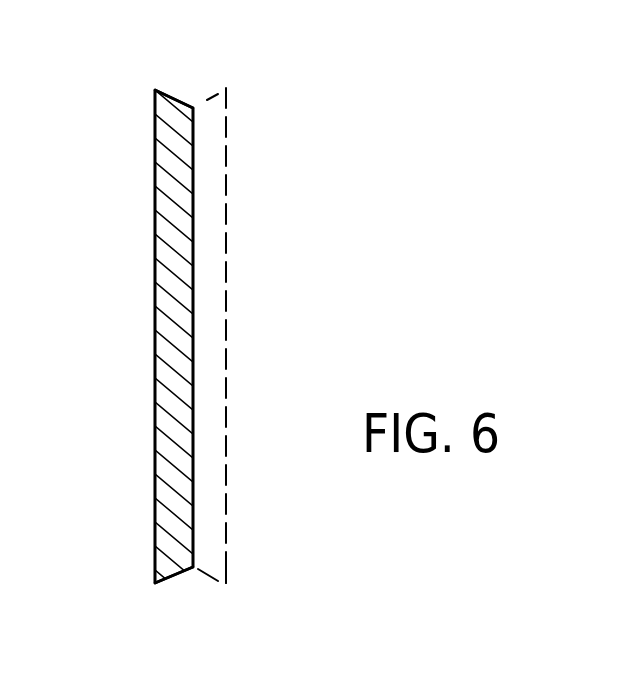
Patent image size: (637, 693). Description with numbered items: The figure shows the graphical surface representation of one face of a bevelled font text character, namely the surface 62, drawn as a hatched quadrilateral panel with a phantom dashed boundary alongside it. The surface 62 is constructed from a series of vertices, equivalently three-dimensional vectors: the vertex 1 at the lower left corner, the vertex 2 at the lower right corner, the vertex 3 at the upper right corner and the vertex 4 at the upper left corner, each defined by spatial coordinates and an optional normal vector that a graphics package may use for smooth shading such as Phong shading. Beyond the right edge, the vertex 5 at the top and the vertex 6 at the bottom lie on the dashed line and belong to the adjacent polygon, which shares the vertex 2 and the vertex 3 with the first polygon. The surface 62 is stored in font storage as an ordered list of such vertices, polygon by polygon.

The surface 62 is at (156, 275).
The vertex 4 is at (156, 90).
The vertex 3 is at (193, 108).
The vertex 5 is at (226, 86).
The vertex 1 is at (155, 583).
The vertex 2 is at (193, 567).
The vertex 6 is at (226, 583).